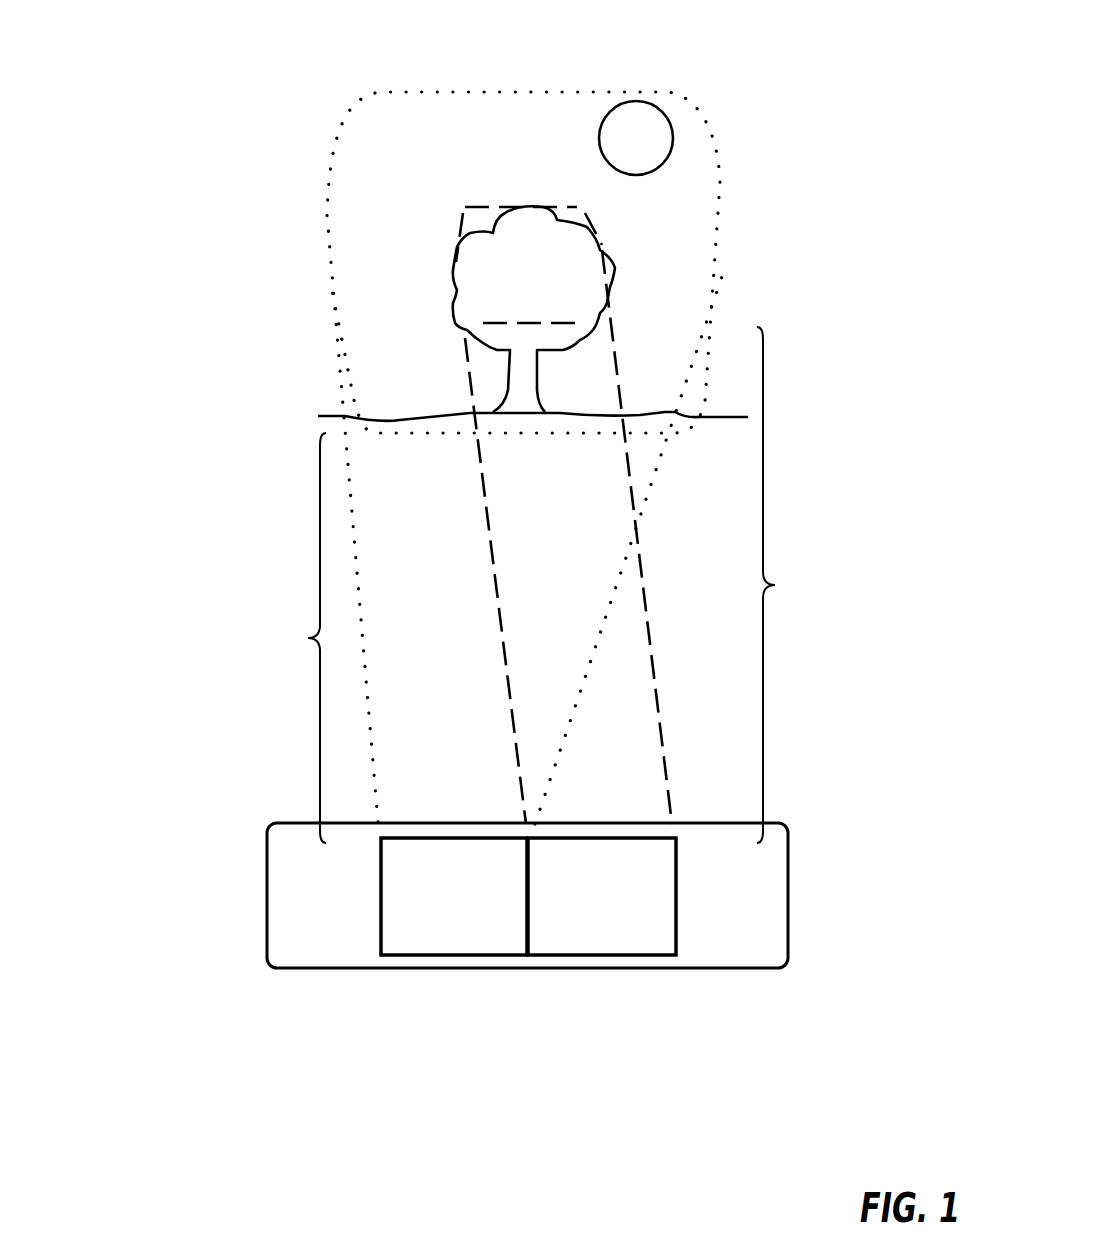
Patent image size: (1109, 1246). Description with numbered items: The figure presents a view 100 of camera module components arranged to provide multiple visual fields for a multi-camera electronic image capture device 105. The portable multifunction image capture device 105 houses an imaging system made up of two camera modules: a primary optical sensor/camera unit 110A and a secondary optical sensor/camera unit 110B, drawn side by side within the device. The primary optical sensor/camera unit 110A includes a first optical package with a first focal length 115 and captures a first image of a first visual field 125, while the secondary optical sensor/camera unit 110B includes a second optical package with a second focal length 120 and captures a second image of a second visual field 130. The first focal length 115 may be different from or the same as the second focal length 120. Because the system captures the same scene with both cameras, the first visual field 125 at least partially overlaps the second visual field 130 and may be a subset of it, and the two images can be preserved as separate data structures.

The view 100 is at (780, 82).
The multi-camera electronic image capture device 105 is at (267, 883).
The primary optical sensor/camera unit 110A is at (676, 925).
The secondary optical sensor/camera unit 110B is at (381, 925).
The first focal length 115 is at (787, 585).
The second focal length 120 is at (296, 638).
The first visual field 125 is at (493, 205).
The second visual field 130 is at (432, 90).